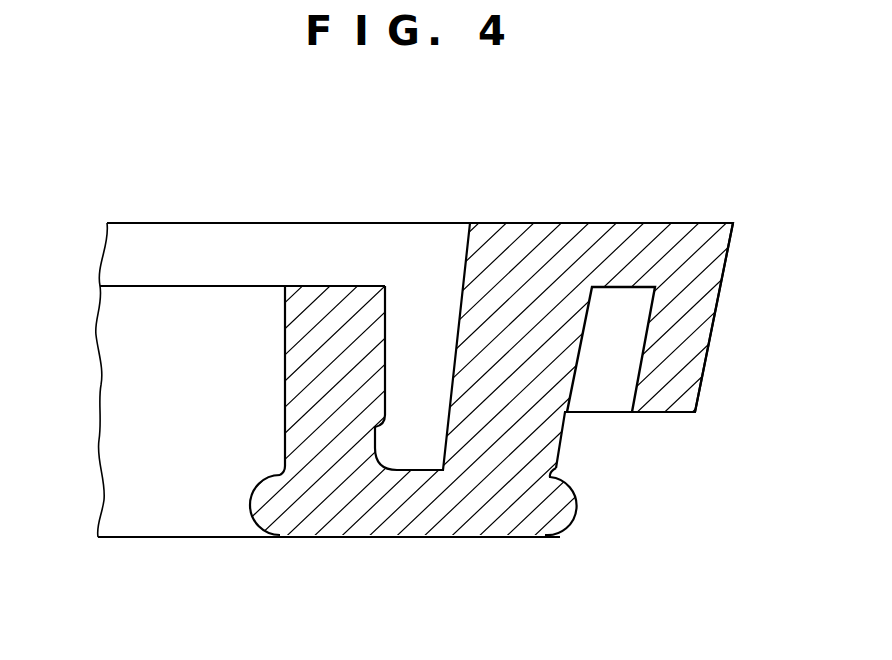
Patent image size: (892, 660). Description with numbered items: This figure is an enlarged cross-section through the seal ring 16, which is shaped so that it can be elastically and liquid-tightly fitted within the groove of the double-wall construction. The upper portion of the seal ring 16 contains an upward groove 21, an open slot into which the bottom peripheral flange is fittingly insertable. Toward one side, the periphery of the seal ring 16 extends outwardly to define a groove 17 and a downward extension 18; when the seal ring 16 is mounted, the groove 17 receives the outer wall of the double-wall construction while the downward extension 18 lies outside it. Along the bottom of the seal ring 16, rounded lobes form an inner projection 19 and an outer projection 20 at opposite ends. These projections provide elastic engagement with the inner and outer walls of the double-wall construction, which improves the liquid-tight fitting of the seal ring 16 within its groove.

The seal ring 16 is at (662, 187).
The groove 17 is at (608, 343).
The downward extension 18 is at (693, 340).
The inner projection 19 is at (257, 505).
The outer projection 20 is at (572, 503).
The upward groove 21 is at (420, 350).